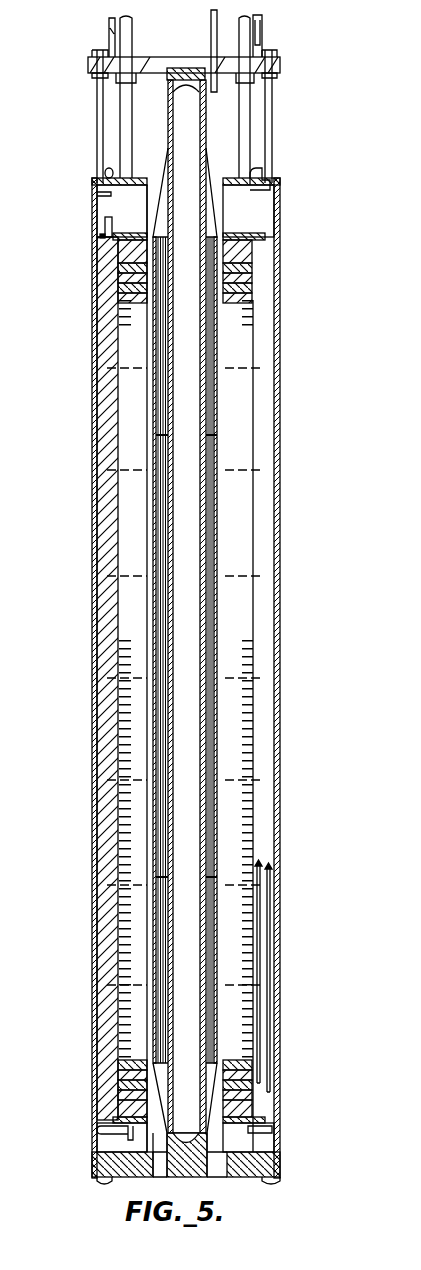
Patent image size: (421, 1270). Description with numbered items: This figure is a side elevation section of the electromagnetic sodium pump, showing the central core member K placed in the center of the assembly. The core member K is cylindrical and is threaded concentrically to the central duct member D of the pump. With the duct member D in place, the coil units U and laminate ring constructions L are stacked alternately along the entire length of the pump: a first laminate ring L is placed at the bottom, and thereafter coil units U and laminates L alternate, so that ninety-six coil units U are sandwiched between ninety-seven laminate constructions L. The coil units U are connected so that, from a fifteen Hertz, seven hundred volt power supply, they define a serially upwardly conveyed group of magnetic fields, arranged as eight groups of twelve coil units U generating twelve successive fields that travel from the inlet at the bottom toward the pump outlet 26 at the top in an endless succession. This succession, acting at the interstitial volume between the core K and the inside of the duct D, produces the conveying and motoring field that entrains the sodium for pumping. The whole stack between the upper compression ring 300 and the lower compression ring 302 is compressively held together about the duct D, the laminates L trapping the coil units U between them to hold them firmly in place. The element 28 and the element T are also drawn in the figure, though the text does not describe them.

The tube post 28 is at (222, 143).
The dielectric cone D is at (153, 172).
The upper hook element 300 is at (126, 245).
The cone K is at (210, 226).
The outer shell T is at (254, 338).
The upper packing element U is at (256, 1082).
The lower packing element L is at (262, 1093).
The lower hook element 302 is at (140, 1127).
The bottom flange 26 is at (222, 1177).